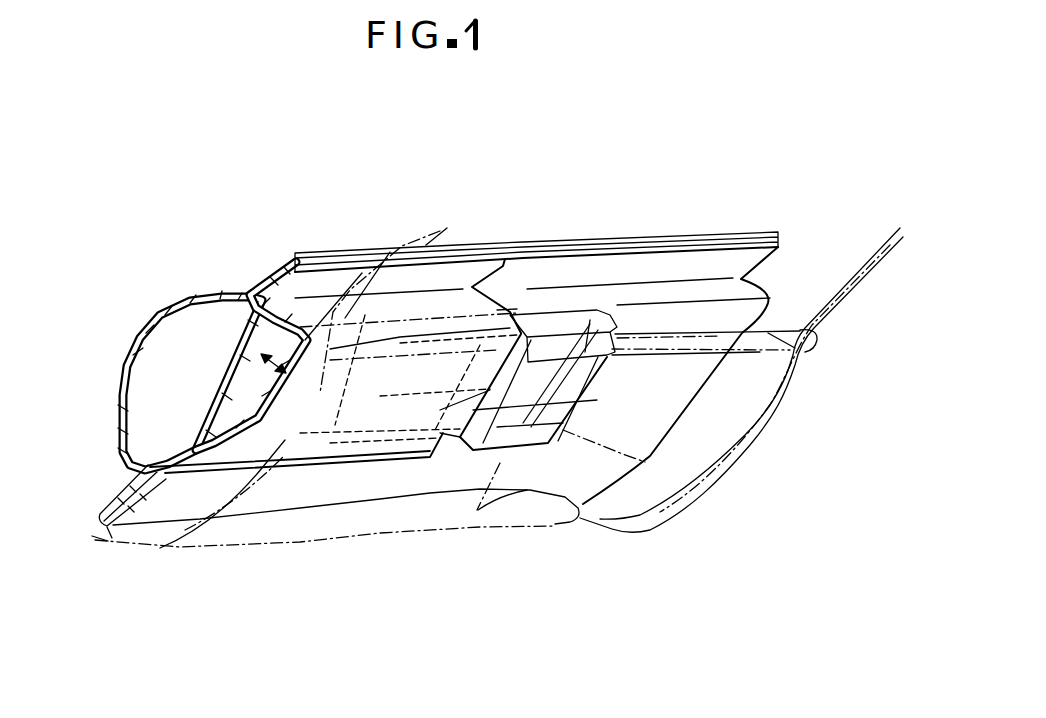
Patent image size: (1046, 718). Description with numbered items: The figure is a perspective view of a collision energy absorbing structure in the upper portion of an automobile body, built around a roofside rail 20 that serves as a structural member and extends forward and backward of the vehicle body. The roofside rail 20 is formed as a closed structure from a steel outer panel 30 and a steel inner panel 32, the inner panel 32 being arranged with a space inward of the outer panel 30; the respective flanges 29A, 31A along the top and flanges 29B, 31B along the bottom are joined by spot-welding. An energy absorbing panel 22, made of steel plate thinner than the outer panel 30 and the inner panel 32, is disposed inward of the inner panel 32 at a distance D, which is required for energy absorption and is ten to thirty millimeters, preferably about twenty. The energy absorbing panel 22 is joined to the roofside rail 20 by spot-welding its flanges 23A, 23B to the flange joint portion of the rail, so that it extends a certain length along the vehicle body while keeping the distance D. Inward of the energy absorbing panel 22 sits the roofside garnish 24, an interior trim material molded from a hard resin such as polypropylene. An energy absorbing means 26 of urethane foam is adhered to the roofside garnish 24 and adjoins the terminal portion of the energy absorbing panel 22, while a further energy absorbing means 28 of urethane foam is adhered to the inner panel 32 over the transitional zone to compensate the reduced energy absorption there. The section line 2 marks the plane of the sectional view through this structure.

The roofside rail 20 is at (385, 247).
The energy absorbing panel 22 is at (246, 388).
The flange 23A is at (452, 258).
The flange 23B is at (152, 500).
The roofside garnish 24 is at (745, 440).
The energy absorbing means 26 is at (713, 356).
The energy absorbing means 28 is at (556, 312).
The flange 29A is at (273, 262).
The flange 29B is at (112, 496).
The outer panel 30 is at (182, 296).
The flange 31A is at (295, 262).
The flange 31B is at (112, 538).
The inner panel 32 is at (233, 375).
The distance D is at (245, 362).
The section line 2 is at (317, 422).